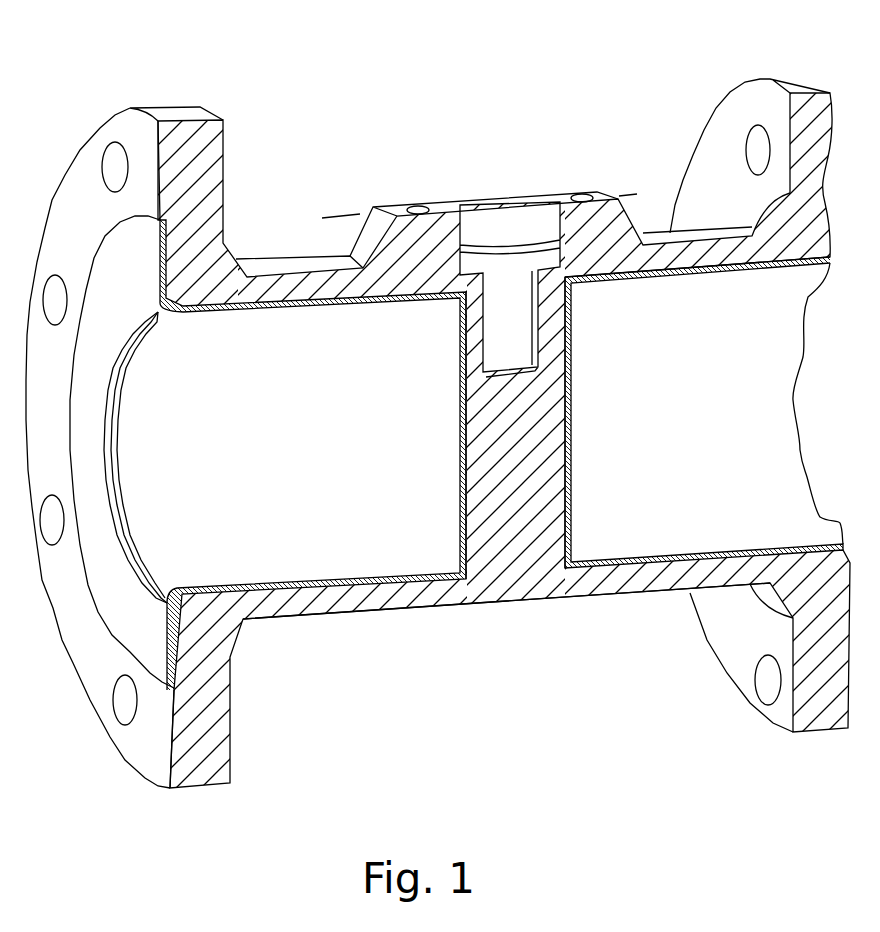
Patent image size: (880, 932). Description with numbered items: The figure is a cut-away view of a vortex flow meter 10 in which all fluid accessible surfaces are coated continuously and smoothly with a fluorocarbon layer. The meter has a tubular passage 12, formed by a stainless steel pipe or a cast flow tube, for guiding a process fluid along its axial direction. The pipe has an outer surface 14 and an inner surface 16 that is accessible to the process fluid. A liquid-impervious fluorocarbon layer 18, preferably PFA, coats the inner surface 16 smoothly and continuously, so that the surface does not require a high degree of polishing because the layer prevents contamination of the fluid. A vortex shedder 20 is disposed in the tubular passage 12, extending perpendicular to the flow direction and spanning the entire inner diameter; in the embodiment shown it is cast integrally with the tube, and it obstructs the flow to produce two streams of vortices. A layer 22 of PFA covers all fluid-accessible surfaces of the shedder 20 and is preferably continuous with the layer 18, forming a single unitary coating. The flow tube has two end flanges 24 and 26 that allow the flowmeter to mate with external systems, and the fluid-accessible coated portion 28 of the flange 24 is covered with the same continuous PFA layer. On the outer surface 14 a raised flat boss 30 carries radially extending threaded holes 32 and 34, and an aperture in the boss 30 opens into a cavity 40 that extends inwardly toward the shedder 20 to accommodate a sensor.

The vortex flow meter 10 is at (246, 62).
The tubular passage 12 is at (146, 448).
The outer surface 14 is at (267, 283).
The inner surface 16 is at (337, 563).
The fluorocarbon layer 18 is at (270, 583).
The vortex shedder 20 is at (450, 473).
The layer of PFA 22 is at (460, 402).
The end flange 24 is at (73, 170).
The end flange 26 is at (740, 93).
The coated portion 28 is at (113, 250).
The raised flat boss 30 is at (443, 200).
The threaded hole 32 is at (416, 206).
The threaded hole 34 is at (581, 194).
The cavity 40 is at (558, 232).